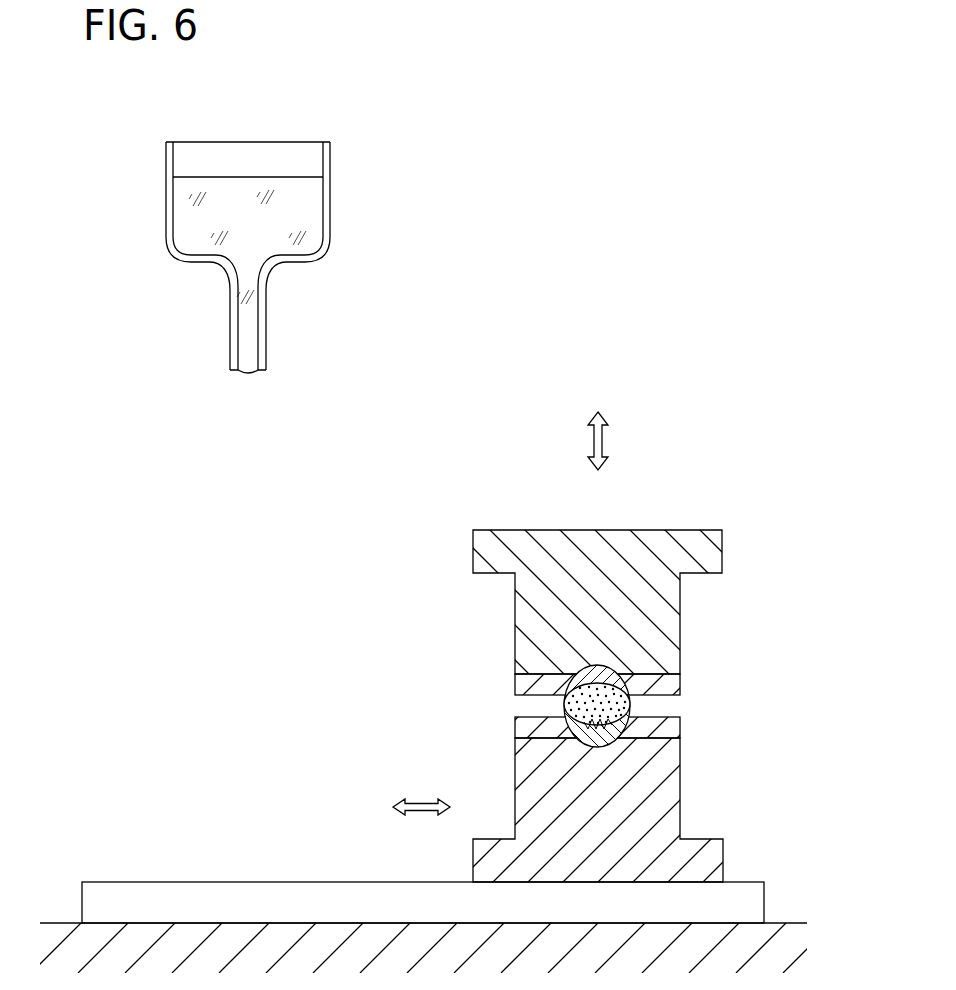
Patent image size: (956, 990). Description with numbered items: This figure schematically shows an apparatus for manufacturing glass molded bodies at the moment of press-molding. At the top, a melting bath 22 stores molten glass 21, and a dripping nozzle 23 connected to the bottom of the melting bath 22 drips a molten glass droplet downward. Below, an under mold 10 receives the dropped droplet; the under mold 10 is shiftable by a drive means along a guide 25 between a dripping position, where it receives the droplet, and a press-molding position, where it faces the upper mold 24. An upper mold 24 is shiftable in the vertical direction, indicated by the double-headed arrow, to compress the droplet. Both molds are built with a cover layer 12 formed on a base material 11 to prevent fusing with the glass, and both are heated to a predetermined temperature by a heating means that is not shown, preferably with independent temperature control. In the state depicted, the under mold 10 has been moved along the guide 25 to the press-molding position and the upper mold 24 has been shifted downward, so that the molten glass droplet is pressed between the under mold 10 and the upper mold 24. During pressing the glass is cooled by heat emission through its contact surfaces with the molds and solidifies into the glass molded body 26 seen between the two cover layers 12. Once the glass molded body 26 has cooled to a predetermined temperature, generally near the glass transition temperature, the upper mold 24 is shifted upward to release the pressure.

The under mold 10 is at (480, 773).
The base material 11 is at (673, 625).
The cover layer 12 is at (673, 683).
The molten glass 21 is at (302, 212).
The melting bath 22 is at (247, 155).
The dripping nozzle 23 is at (266, 322).
The upper mold 24 is at (698, 416).
The guide 25 is at (752, 905).
The glass molded body 26 is at (546, 707).